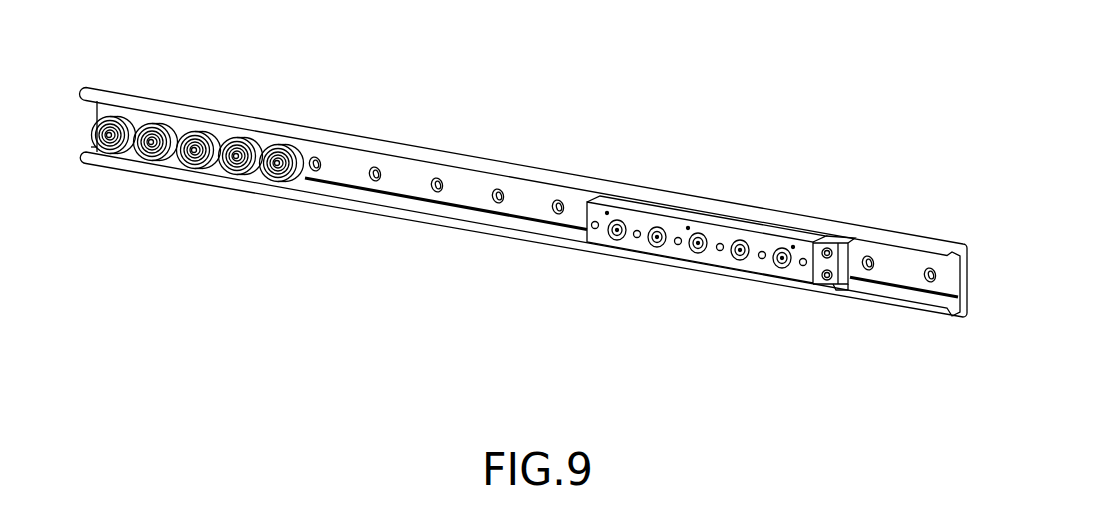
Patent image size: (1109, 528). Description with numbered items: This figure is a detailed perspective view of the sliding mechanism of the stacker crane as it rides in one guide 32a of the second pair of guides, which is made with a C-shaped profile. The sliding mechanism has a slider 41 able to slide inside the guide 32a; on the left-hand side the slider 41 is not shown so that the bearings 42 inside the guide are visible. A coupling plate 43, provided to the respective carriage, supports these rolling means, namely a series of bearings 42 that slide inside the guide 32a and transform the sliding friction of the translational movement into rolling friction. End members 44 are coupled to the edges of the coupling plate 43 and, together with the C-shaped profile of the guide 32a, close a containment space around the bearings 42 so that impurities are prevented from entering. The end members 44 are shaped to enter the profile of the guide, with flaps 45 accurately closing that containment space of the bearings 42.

The second guide 32a is at (472, 163).
The slider 41 is at (720, 259).
The bearings 42 is at (252, 175).
The coupling plate 43 is at (793, 273).
The end members 44 is at (840, 265).
The flaps 45 is at (838, 243).